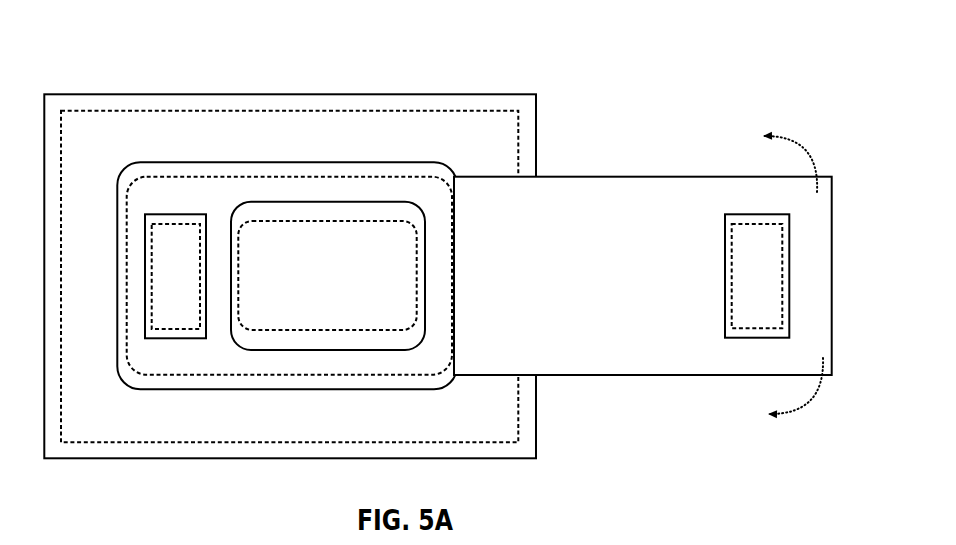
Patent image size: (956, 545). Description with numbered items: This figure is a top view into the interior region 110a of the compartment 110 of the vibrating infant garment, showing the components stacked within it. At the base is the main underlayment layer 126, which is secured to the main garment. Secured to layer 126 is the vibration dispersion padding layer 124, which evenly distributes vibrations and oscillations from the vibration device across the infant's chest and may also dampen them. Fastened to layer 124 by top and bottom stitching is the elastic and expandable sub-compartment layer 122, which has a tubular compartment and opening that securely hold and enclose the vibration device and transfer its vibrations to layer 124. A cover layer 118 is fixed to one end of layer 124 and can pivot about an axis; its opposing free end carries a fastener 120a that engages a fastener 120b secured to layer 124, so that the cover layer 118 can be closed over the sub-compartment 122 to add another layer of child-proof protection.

The compartment 110 is at (437, 272).
The interior region 110a is at (497, 138).
The cover layer 118 is at (576, 198).
The fastener 120a is at (758, 307).
The fastener 120b is at (182, 243).
The sub-compartment layer 122 is at (326, 239).
The vibration dispersion padding layer 124 is at (217, 361).
The main underlayment layer 126 is at (432, 412).